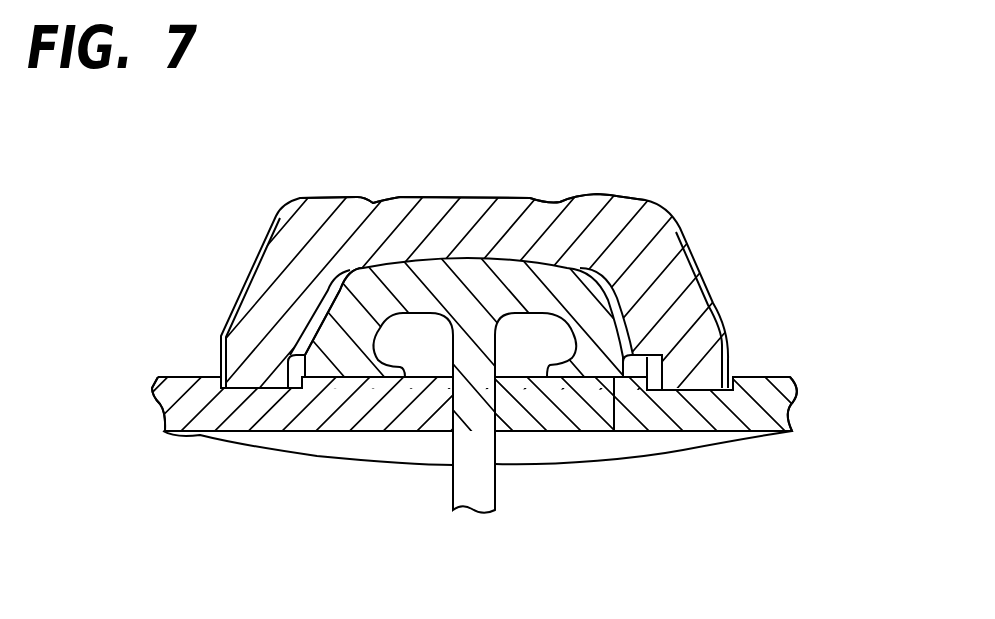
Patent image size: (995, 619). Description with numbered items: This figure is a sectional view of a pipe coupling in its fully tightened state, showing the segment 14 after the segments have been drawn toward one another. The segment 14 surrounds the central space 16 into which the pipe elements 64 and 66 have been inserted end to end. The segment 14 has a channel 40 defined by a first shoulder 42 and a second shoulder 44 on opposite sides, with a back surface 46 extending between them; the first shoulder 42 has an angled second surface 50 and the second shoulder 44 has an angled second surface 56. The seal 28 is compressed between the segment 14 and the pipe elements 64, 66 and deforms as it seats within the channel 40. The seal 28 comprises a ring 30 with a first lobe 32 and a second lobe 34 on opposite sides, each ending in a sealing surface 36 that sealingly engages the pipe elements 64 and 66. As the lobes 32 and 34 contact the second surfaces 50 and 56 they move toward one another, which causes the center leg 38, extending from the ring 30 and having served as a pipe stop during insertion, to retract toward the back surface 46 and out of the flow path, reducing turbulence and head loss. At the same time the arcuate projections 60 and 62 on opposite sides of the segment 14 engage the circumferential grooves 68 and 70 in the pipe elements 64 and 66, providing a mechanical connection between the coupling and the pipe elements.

The second segment 14 is at (643, 200).
The central space 16 is at (434, 577).
The seal 28 is at (512, 275).
The ring 30 is at (447, 300).
The first lobe 32 is at (350, 327).
The second lobe 34 is at (613, 383).
The sealing surface 36 is at (357, 380).
The center leg 38 is at (485, 418).
The channel 40 is at (470, 257).
The first shoulder 42 is at (277, 280).
The second shoulder 44 is at (713, 313).
The back surface 46 is at (400, 210).
The second surface 50 is at (333, 297).
The second surface 56 is at (668, 322).
The arcuate projection 60 is at (260, 380).
The arcuate projection 62 is at (730, 357).
The pipe element 64 is at (164, 423).
The pipe element 66 is at (792, 427).
The circumferential groove 68 is at (252, 397).
The circumferential groove 70 is at (697, 397).